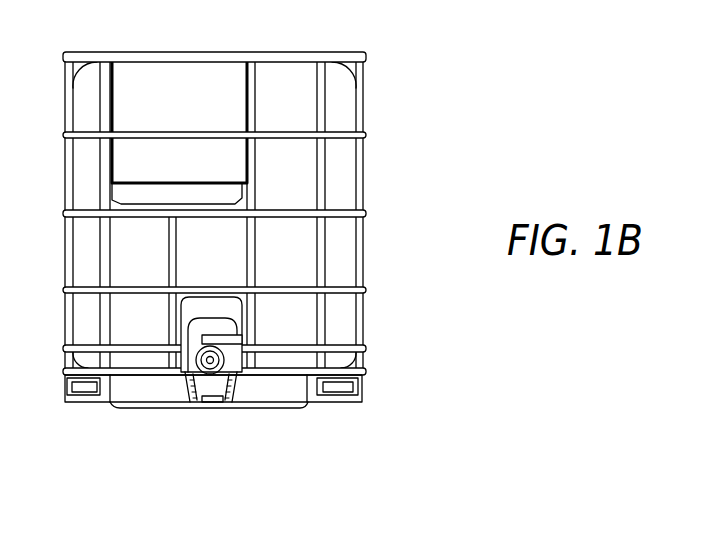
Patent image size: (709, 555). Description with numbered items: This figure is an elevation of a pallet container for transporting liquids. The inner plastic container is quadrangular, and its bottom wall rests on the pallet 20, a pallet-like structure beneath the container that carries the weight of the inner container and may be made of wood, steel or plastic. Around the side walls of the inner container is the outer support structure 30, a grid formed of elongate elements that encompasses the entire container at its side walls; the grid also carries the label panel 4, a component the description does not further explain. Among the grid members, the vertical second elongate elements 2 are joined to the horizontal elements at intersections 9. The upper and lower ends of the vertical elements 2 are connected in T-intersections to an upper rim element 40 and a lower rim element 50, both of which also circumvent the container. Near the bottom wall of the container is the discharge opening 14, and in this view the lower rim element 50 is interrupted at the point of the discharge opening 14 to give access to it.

The second elongate element 2 is at (265, 210).
The inner container / bottle 4 is at (312, 163).
The intersection 9 is at (313, 218).
The discharge opening 14 is at (238, 372).
The pallet 20 is at (362, 397).
The outer support structure 30 is at (364, 250).
The upper rim element 40 is at (337, 54).
The lower rim element 50 is at (362, 370).